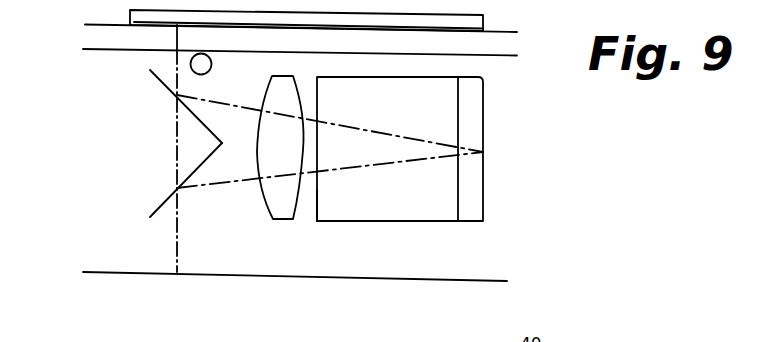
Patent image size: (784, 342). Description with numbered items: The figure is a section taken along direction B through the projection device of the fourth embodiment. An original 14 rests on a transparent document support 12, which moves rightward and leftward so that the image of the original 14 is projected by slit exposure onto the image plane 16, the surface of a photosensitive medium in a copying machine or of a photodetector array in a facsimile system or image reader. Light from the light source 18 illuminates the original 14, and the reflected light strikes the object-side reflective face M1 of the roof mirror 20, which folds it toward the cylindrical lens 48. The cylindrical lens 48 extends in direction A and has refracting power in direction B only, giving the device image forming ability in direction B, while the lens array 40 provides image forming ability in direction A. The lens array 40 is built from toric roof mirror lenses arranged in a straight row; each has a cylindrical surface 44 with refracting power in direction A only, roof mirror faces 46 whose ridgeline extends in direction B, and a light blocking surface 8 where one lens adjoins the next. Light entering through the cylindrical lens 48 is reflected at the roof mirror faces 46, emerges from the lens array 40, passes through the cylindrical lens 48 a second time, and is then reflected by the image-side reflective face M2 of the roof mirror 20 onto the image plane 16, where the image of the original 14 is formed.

The light blocking surface 8 is at (439, 212).
The transparent document support 12 is at (120, 49).
The original 14 is at (177, 13).
The image plane 16 is at (465, 278).
The light source 18 is at (208, 73).
The roof mirror 20 is at (178, 143).
The object-side reflective face M1 is at (200, 123).
The image-side reflective face M2 is at (182, 180).
The lens array 40 is at (365, 228).
The cylindrical surface 44 is at (314, 204).
The roof mirror faces 46 is at (477, 113).
The cylindrical lens 48 is at (280, 211).